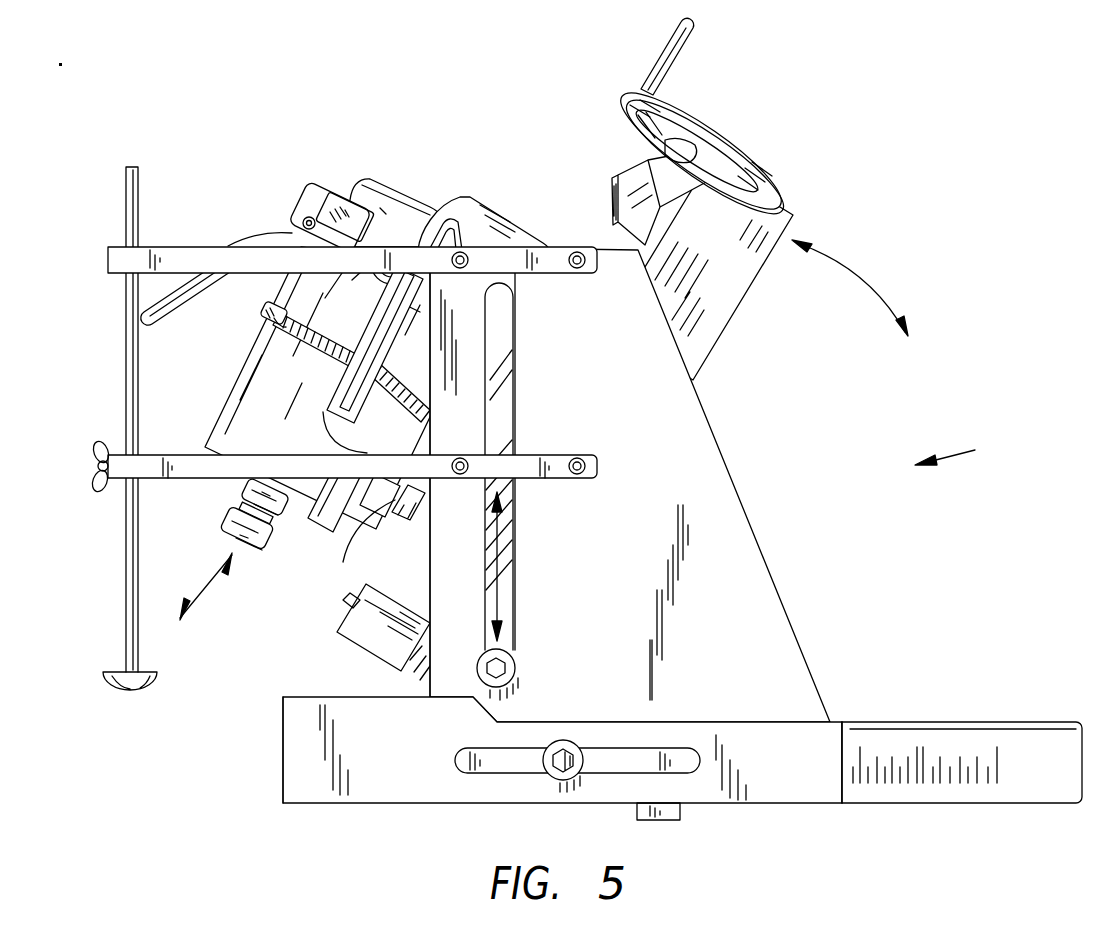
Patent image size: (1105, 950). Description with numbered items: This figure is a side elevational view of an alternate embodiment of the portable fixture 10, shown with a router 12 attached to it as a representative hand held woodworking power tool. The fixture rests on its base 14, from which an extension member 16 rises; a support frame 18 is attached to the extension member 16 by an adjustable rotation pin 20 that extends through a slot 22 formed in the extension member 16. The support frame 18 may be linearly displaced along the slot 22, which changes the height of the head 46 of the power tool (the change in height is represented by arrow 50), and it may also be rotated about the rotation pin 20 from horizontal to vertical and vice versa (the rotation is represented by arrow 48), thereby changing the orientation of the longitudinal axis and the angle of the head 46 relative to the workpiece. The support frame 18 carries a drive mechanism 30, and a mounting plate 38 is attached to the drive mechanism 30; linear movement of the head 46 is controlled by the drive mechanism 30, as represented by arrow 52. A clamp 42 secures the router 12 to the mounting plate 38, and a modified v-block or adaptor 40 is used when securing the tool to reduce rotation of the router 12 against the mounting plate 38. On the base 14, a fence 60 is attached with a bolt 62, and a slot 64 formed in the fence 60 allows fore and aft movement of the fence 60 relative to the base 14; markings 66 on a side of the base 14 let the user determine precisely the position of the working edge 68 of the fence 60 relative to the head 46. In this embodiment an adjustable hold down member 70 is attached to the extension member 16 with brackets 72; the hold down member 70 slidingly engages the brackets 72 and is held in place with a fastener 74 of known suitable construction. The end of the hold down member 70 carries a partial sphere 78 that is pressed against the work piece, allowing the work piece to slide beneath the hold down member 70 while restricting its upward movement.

The portable fixture 10 is at (963, 449).
The router 12 is at (223, 410).
The base 14 is at (985, 735).
The extension member 16 is at (705, 438).
The support frame 18 is at (735, 314).
The rotation pin 20 is at (515, 665).
The slot 22 is at (512, 490).
The drive mechanism 30 is at (718, 118).
The mounting plate 38 is at (515, 218).
The adaptor 40 is at (378, 512).
The clamp 42 is at (262, 316).
The head 46 is at (222, 530).
The arrow 48 is at (860, 278).
The arrow 50 is at (498, 568).
The arrow 52 is at (206, 596).
The fence 60 is at (386, 786).
The bolt 62 is at (555, 774).
The base slot 64 is at (687, 763).
The markings 66 is at (998, 758).
The working edge 68 is at (283, 727).
The hold down member 70 is at (127, 522).
The bracket 72 is at (178, 252).
The fastener 74 is at (95, 452).
The partial sphere 78 is at (121, 684).